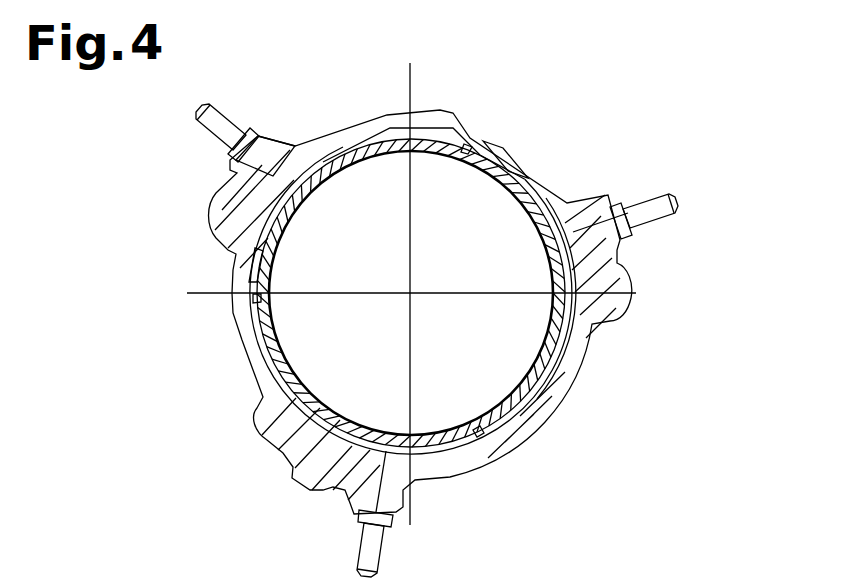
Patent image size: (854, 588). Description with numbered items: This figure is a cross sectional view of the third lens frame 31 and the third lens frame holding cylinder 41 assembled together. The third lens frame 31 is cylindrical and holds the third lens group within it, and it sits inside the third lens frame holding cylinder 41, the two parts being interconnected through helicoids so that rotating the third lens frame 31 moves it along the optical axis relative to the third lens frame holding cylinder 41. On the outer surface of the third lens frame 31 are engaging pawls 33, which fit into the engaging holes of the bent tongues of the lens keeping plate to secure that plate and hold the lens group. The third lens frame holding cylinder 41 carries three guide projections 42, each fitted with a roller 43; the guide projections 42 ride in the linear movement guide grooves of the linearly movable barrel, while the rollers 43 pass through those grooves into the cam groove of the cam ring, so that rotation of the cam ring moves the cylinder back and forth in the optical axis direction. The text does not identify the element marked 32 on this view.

The third lens frame 31 is at (442, 152).
The projection 32 is at (533, 177).
The engaging pawl 33 is at (497, 160).
The third lens frame holding cylinder 41 is at (427, 106).
The guide projection 42 is at (262, 130).
The roller 43 is at (653, 213).